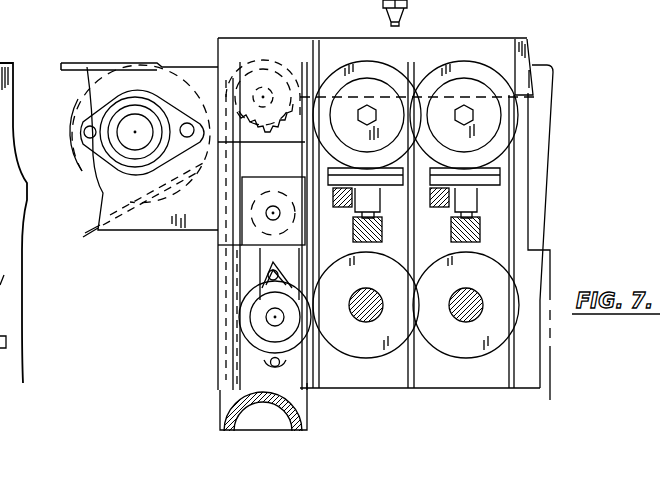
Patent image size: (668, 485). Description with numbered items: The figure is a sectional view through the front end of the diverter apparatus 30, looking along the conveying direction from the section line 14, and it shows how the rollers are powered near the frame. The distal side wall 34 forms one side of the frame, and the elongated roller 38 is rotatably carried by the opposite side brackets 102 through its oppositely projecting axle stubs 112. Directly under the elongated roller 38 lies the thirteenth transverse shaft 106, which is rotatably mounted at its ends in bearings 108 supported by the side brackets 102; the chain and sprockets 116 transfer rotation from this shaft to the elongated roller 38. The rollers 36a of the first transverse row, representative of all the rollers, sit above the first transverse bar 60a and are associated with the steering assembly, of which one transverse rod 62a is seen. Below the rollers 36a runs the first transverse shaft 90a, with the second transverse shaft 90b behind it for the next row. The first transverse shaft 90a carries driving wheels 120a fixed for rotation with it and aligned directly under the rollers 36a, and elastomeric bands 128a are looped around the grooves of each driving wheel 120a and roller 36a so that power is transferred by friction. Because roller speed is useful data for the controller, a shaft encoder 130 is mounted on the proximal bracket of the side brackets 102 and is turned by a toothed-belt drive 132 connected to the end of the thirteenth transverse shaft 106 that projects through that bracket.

The section line 14 is at (463, 47).
The diverter apparatus 30 is at (563, 177).
The distal side wall 34 is at (17, 254).
The rollers of the first transverse row 36a is at (393, 77).
The elongated roller 38 is at (233, 58).
The first transverse bar 60a is at (480, 231).
The transverse rod 62a is at (330, 195).
The first transverse shaft 90a is at (376, 318).
The second transverse shaft 90b is at (470, 322).
The side brackets 102 is at (228, 378).
The thirteenth transverse shaft 106 is at (268, 315).
The bearings 108 is at (258, 350).
The axle stubs 112 is at (245, 78).
The chain and sprockets 116 is at (267, 77).
The driving wheels 120a is at (350, 352).
The elastomeric bands 128a is at (324, 150).
The shaft encoder 130 is at (243, 197).
The toothed-belt drive 132 is at (247, 263).